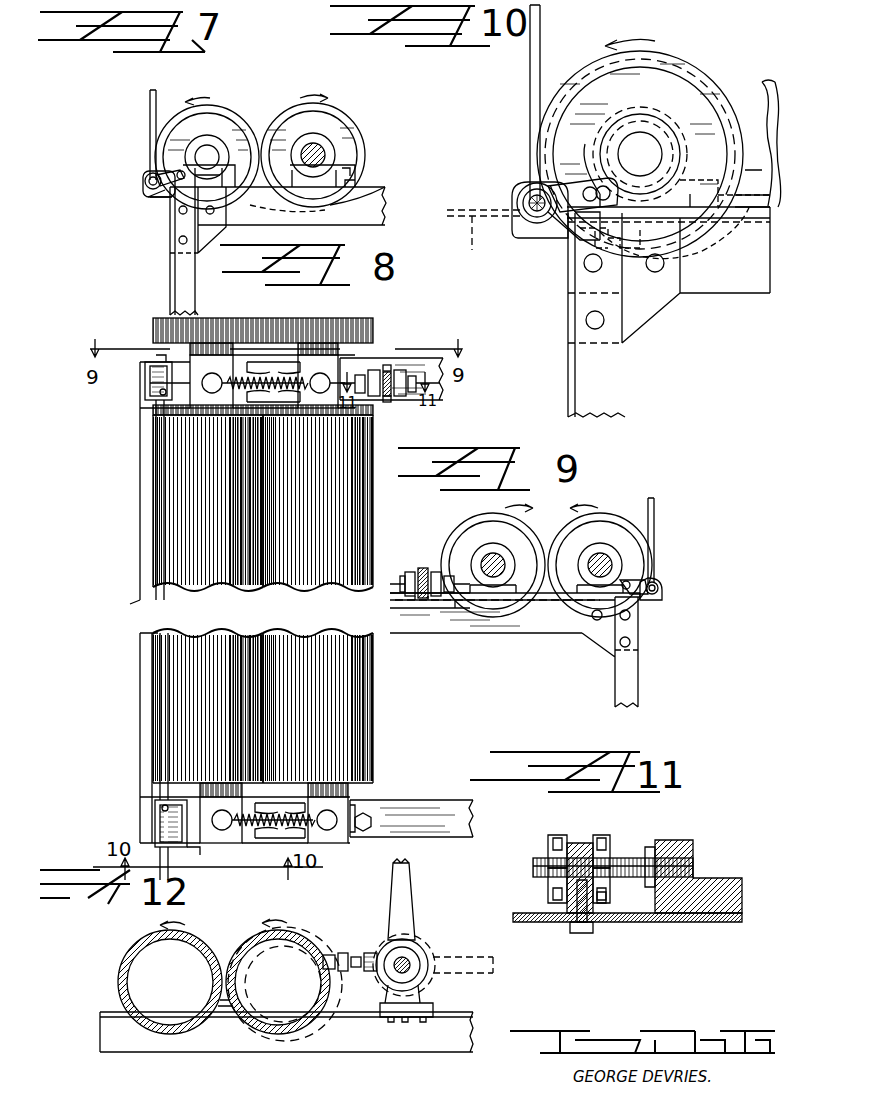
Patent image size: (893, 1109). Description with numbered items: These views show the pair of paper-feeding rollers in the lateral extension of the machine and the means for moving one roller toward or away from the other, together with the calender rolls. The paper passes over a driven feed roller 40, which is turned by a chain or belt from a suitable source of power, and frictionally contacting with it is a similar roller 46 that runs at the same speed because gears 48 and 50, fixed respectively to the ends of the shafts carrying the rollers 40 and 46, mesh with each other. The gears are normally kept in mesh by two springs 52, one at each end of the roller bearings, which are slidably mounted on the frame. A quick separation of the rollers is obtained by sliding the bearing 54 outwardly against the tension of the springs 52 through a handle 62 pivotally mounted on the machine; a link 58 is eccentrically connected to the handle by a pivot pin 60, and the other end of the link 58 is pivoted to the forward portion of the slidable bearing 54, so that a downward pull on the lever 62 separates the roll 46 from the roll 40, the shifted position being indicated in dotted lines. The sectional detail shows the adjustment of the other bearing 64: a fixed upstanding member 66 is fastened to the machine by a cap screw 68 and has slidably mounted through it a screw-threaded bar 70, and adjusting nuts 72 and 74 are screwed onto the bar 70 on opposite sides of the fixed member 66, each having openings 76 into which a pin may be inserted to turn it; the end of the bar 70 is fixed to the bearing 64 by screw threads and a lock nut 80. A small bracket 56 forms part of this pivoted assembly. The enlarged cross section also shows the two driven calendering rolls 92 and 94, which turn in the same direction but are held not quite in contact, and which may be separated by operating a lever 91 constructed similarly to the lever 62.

In FIG. 7, the feed roller 40 is at (280, 128).
In FIG. 10, the feed roller 40 is at (768, 88).
In FIG. 8, the feed roller 40 is at (338, 512).
In FIG. 9, the feed roller 40 is at (477, 542).
In FIG. 7, the roller 46 is at (220, 120).
In FIG. 10, the roller 46 is at (655, 72).
In FIG. 8, the roller 46 is at (190, 516).
In FIG. 9, the roller 46 is at (618, 520).
In FIG. 8, the gear 48 is at (305, 330).
In FIG. 8, the gear 50 is at (202, 335).
In FIG. 8, the springs 52 is at (258, 385).
In FIG. 7, the bearing 54 is at (232, 178).
In FIG. 10, the bearing 54 is at (688, 194).
In FIG. 8, the bearing 54 is at (200, 372).
In FIG. 9, the bearing 54 is at (572, 588).
In FIG. 7, the link 56 is at (180, 170).
In FIG. 7, the link 58 is at (165, 192).
In FIG. 10, the link 58 is at (560, 212).
In FIG. 9, the link 58 is at (640, 600).
In FIG. 7, the pivot pin 60 is at (145, 182).
In FIG. 10, the pivot pin 60 is at (523, 195).
In FIG. 9, the pivot pin 60 is at (660, 582).
In FIG. 7, the handle 62 is at (150, 132).
In FIG. 10, the handle 62 is at (541, 45).
In FIG. 8, the handle 62 is at (150, 390).
In FIG. 9, the handle 62 is at (656, 520).
In FIG. 8, the bearing 64 is at (360, 372).
In FIG. 9, the bearing 64 is at (468, 587).
In FIG. 11, the bearing 64 is at (717, 885).
In FIG. 9, the fixed upstanding member 66 is at (420, 570).
In FIG. 11, the fixed upstanding member 66 is at (580, 845).
In FIG. 11, the cap screw 68 is at (587, 933).
In FIG. 11, the screw-threaded bar 70 is at (628, 858).
In FIG. 8, the adjusting nut 72 is at (405, 372).
In FIG. 9, the adjusting nut 72 is at (405, 590).
In FIG. 11, the adjusting nut 72 is at (549, 890).
In FIG. 8, the adjusting nut 74 is at (387, 400).
In FIG. 11, the adjusting nut 74 is at (612, 900).
In FIG. 11, the openings 76 is at (555, 836).
In FIG. 11, the lock nut 80 is at (656, 850).
In FIG. 12, the lever 91 is at (408, 915).
In FIG. 12, the calendering roll 92 is at (278, 1005).
In FIG. 12, the calendering roll 94 is at (165, 1012).